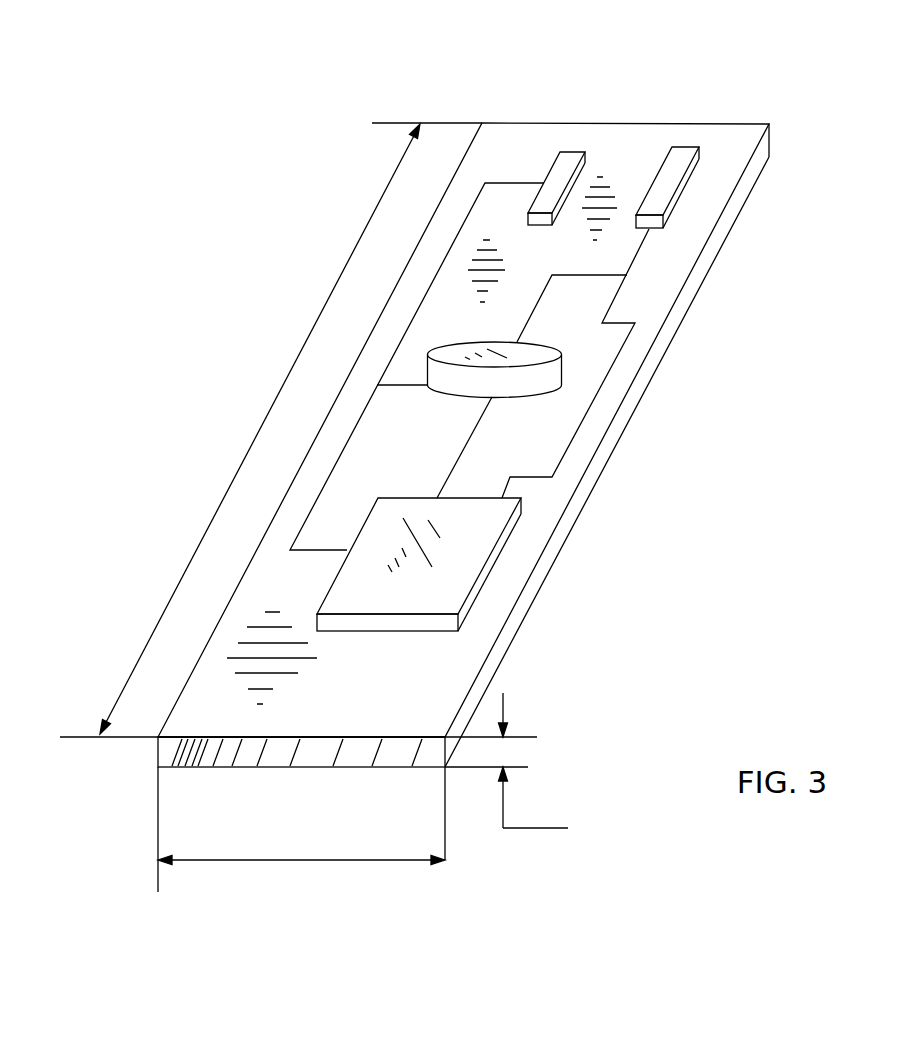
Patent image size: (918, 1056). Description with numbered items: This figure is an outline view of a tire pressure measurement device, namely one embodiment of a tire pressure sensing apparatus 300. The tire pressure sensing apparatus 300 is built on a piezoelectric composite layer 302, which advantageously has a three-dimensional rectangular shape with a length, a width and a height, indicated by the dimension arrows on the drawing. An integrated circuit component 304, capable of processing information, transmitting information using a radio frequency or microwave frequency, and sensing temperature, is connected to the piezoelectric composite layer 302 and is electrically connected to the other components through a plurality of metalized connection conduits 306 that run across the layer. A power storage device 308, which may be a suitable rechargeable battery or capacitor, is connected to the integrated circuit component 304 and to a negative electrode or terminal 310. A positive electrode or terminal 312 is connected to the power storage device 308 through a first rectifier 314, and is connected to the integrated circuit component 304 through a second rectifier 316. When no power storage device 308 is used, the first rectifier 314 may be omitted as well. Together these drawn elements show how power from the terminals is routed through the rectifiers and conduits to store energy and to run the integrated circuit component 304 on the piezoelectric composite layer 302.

The tire pressure sensing apparatus 300 is at (78, 825).
The piezoelectric composite layer 302 is at (463, 445).
The integrated circuit component 304 is at (480, 562).
The metalized connection conduits 306 is at (548, 490).
The power storage device 308 is at (543, 380).
The negative electrode or terminal 310 is at (560, 162).
The positive electrode or terminal 312 is at (674, 183).
The first rectifier 314 is at (548, 305).
The second rectifier 316 is at (601, 393).